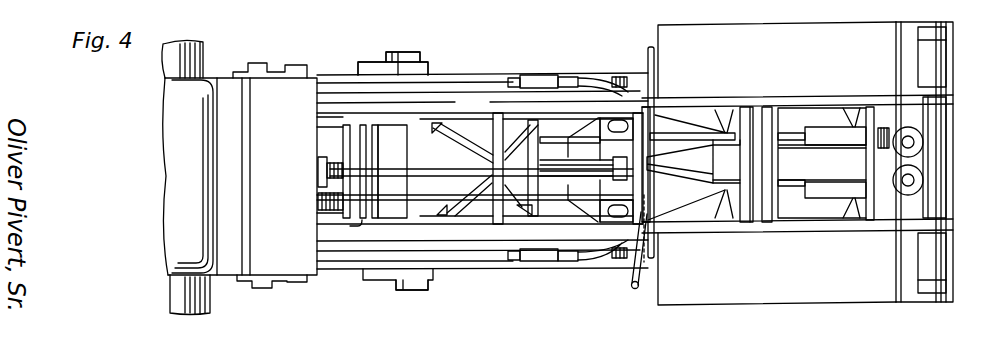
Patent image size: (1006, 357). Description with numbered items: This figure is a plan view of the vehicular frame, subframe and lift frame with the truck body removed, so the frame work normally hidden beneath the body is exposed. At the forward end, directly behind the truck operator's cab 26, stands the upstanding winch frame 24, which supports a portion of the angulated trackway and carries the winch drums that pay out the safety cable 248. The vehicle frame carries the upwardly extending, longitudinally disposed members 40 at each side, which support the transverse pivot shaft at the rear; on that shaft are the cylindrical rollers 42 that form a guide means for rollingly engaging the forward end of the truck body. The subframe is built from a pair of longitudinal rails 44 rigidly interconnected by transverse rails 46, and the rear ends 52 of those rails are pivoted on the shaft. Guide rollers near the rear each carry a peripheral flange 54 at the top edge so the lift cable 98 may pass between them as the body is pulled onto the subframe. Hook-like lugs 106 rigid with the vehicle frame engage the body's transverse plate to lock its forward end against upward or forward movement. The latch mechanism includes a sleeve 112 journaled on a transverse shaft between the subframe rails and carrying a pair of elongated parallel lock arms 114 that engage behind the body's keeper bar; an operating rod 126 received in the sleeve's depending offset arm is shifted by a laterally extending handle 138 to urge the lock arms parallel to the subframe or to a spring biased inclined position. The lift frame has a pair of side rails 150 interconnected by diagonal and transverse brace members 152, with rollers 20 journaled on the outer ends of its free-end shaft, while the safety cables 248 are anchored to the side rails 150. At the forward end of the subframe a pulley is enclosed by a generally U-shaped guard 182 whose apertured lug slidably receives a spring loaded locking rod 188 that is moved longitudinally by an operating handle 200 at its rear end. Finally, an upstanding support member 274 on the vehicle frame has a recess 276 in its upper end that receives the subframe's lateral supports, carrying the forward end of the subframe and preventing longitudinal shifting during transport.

The rollers 20 is at (597, 78).
The winch frame 24 is at (274, 86).
The truck operator's cab 26 is at (190, 96).
The upwardly extending longitudinally disposed members 40 is at (796, 43).
The cylindrical rollers 42 is at (935, 122).
The longitudinal rails 44 is at (730, 103).
The transverse rails 46 is at (768, 123).
The rear ends of frame rails 52 is at (953, 217).
The peripheral flange 54 is at (914, 143).
The lift cable 98 is at (417, 172).
The hook-like lugs 106 is at (352, 223).
The sleeve 112 is at (868, 105).
The lock arms 114 is at (822, 192).
The operating rod 126 is at (675, 143).
The laterally extending handle 138 is at (651, 47).
The side rails 150 is at (432, 114).
The diagonal and transverse brace members 152 is at (457, 143).
The U-shaped guard 182 is at (316, 160).
The locking rod 188 is at (470, 198).
The operating handle 200 is at (634, 285).
The safety cable 248 is at (574, 75).
The upstanding support member 274 is at (421, 55).
The recess 276 is at (398, 48).